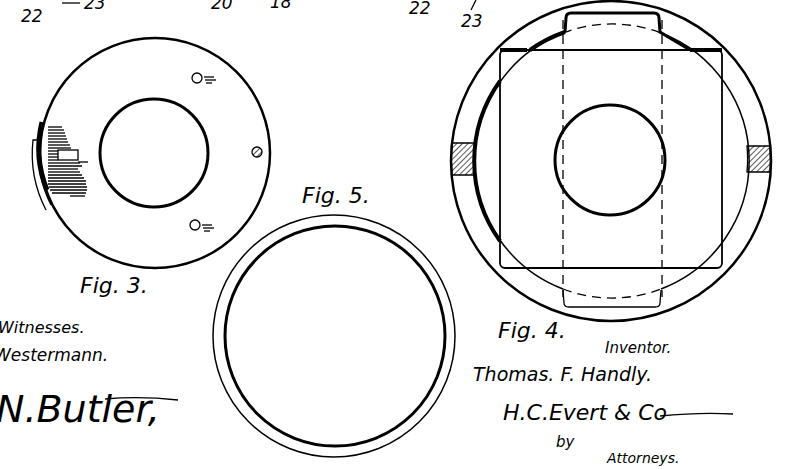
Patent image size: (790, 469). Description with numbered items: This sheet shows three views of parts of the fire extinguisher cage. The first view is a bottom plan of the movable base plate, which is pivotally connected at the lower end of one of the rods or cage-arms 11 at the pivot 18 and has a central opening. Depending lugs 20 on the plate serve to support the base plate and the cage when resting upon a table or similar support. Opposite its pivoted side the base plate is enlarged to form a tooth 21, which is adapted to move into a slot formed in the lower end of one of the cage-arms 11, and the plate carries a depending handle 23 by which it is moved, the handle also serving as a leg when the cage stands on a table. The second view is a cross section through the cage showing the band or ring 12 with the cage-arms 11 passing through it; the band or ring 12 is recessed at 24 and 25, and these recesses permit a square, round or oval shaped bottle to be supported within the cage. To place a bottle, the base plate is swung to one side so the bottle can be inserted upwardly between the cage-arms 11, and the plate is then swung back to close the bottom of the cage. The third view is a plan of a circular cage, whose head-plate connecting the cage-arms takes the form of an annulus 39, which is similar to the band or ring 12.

In FIG. 4, the rods or cage-arms 11 is at (452, 155).
In FIG. 4, the band or ring 12 is at (470, 99).
In FIG. 3, the pivot connection 18 is at (263, 150).
In FIG. 3, the depending lugs 20 is at (200, 82).
In FIG. 3, the tooth 21 is at (33, 151).
In FIG. 3, the depending handle 23 is at (68, 150).
In FIG. 4, the recess 24 is at (713, 47).
In FIG. 4, the recess 25 is at (618, 15).
In FIG. 5, the annulus 39 is at (413, 400).